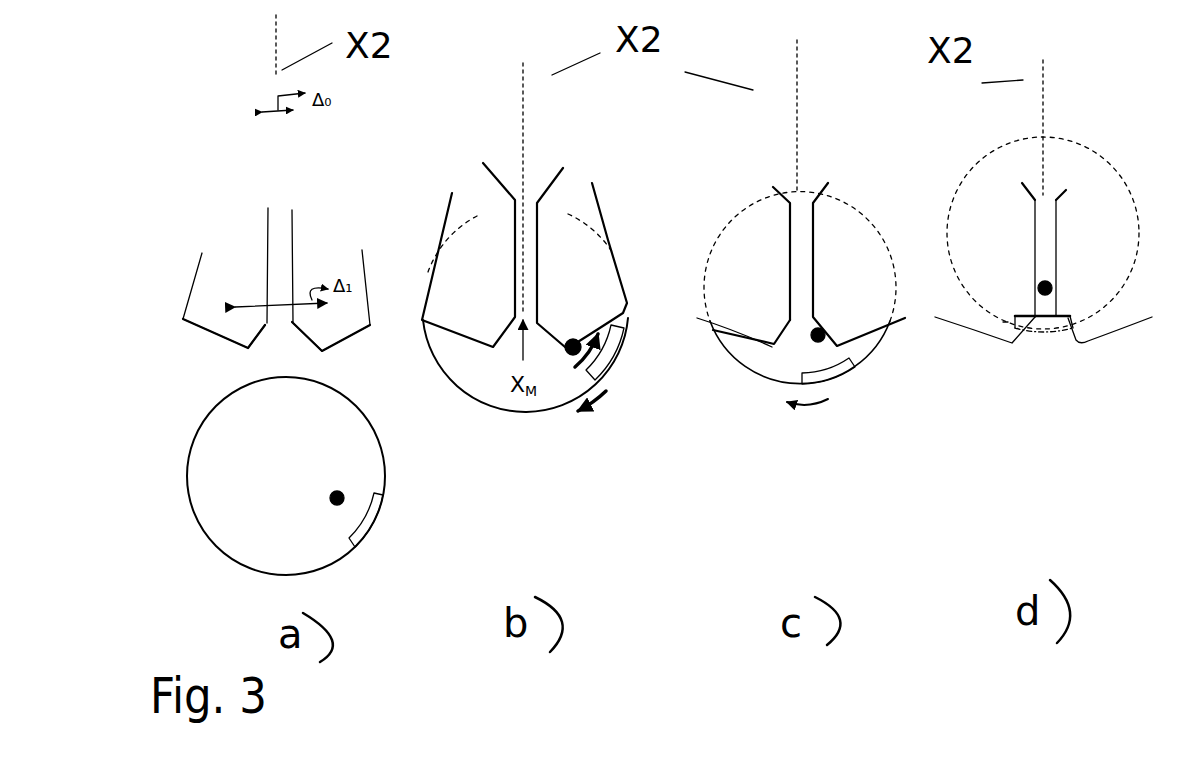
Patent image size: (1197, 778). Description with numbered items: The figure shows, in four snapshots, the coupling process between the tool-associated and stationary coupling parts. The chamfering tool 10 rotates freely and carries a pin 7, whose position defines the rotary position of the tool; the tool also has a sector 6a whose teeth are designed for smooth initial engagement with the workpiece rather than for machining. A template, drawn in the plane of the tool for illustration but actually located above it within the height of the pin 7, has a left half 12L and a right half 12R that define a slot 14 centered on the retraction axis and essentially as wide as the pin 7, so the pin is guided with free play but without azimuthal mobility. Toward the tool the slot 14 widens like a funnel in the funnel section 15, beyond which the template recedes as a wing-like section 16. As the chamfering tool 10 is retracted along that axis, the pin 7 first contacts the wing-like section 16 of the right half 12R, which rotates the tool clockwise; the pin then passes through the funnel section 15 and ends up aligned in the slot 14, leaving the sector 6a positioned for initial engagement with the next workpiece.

The sector 6a is at (367, 527).
The pin 7 is at (330, 510).
The chamfering tool 10 is at (467, 370).
The left half of the template 12L is at (232, 278).
The right half of the template 12R is at (325, 262).
The slot 14 is at (280, 230).
The funnel section 15 is at (310, 340).
The wing-like section 16 is at (352, 342).